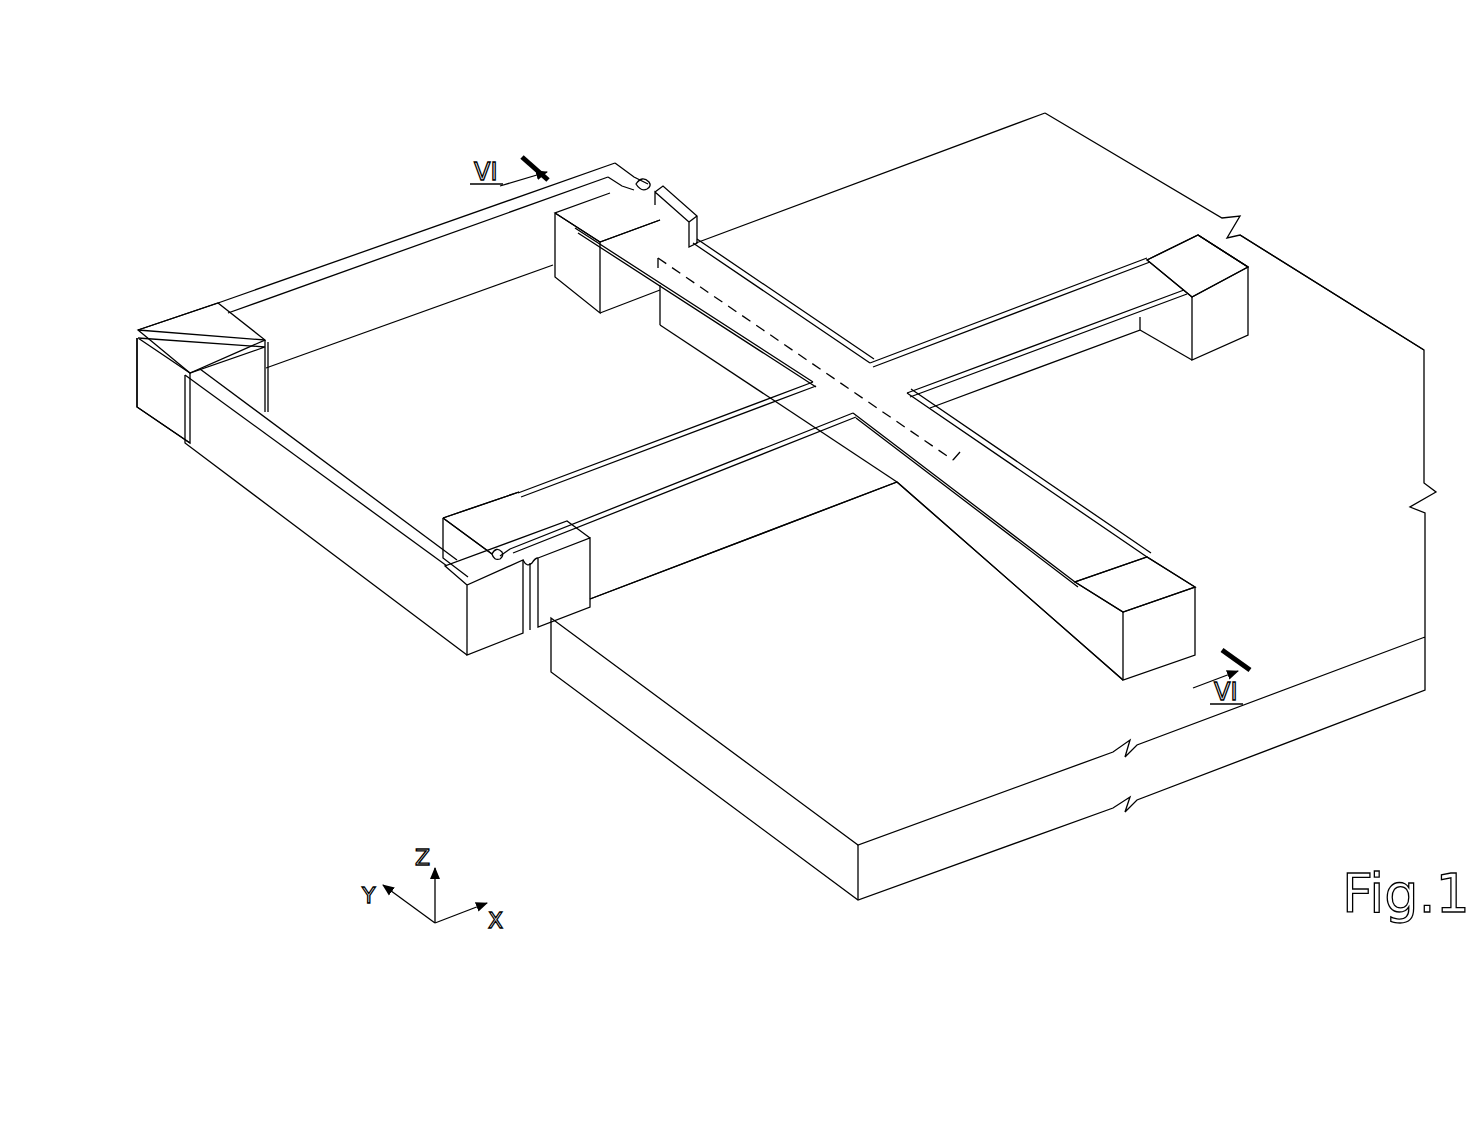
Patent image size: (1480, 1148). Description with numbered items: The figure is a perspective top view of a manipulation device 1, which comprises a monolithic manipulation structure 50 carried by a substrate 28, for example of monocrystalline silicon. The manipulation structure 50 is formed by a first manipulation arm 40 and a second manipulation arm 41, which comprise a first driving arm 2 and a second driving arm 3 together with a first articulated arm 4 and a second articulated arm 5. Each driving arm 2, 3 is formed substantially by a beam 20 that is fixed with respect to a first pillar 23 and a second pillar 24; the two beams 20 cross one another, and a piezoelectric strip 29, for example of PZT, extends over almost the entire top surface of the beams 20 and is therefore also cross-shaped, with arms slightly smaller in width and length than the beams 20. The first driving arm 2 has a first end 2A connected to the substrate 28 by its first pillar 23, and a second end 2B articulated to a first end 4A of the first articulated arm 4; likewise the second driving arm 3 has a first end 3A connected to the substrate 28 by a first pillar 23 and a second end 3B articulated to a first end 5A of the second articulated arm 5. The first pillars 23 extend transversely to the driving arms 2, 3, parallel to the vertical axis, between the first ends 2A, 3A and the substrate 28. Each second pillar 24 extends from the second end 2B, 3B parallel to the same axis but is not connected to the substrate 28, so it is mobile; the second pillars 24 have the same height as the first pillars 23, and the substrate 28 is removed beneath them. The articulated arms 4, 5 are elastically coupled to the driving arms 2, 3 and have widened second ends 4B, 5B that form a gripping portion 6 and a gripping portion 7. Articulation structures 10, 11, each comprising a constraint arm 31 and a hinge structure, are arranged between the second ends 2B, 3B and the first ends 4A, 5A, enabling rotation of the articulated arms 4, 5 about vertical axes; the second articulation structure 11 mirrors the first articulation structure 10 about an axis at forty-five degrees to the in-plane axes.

The manipulation device 1 is at (1202, 150).
The first driving arm 2 is at (801, 308).
The first end of first driving arm 2A is at (1141, 570).
The second end of first driving arm 2B is at (575, 217).
The second driving arm 3 is at (918, 336).
The first end of second driving arm 3A is at (1181, 258).
The second end of second driving arm 3B is at (456, 515).
The first articulated arm 4 is at (361, 250).
The first end of first articulated arm 4A is at (638, 172).
The second end of first articulated arm 4B is at (190, 301).
The second articulated arm 5 is at (344, 453).
The first end of second articulated arm 5A is at (490, 632).
The second end of second articulated arm 5B is at (166, 388).
The gripping portion 6 is at (215, 306).
The gripping portion 7 is at (143, 383).
The articulation structure 10 is at (653, 185).
The articulation structure 11 is at (497, 550).
The beam 20 is at (1086, 336).
The first pillar 23 is at (1242, 335).
The second pillar 24 is at (566, 272).
The substrate 28 is at (881, 798).
The piezoelectric strip 29 is at (980, 345).
The constraint arm 31 is at (664, 212).
The first manipulation arm 40 is at (1005, 547).
The second manipulation arm 41 is at (1240, 250).
The manipulation structure 50 is at (1268, 306).